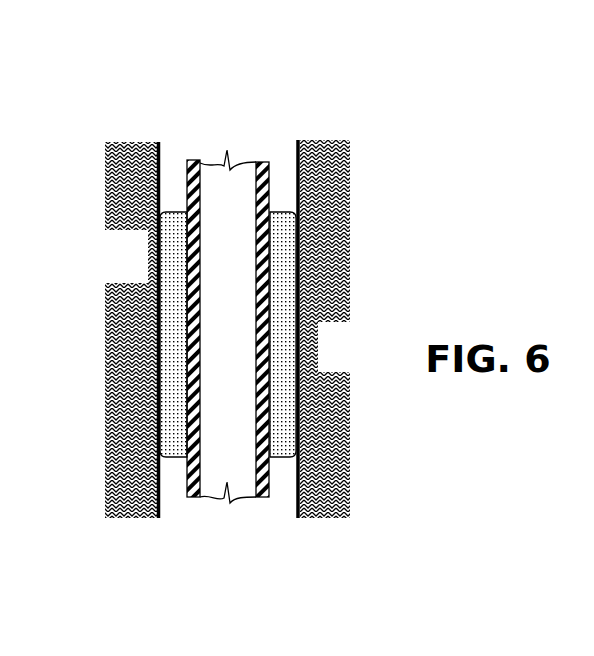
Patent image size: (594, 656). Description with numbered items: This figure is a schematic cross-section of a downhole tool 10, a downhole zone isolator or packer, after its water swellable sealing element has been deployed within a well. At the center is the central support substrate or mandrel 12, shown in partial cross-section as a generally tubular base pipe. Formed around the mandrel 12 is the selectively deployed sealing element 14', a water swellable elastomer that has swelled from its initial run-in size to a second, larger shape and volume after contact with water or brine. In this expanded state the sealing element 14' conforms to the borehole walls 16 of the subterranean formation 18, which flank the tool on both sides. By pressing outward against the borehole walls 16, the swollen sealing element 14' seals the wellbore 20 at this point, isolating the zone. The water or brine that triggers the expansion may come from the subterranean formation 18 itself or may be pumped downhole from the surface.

The downhole tool 10 is at (263, 152).
The central support substrate or mandrel 12 is at (188, 492).
The selectively deployed sealing element 14' is at (229, 398).
The borehole walls 16 is at (160, 160).
The subterranean formation 18 is at (92, 268).
The wellbore 20 is at (285, 185).